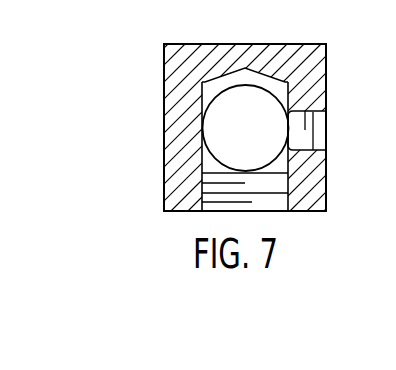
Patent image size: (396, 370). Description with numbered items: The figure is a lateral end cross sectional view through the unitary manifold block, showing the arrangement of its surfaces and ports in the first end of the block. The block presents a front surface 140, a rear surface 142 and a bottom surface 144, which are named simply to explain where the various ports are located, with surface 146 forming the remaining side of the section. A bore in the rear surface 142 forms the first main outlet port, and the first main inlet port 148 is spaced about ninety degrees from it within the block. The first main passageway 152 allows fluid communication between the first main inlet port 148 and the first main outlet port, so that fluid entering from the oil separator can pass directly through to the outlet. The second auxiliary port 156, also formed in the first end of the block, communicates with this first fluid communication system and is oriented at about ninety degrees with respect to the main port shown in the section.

The front surface 140 is at (323, 68).
The rear surface 142 is at (164, 160).
The bottom surface 144 is at (262, 44).
The bottom wall 146 is at (182, 211).
The first main inlet port 148 is at (283, 211).
The first main passageway 152 is at (254, 143).
The second auxiliary port 156 is at (323, 146).